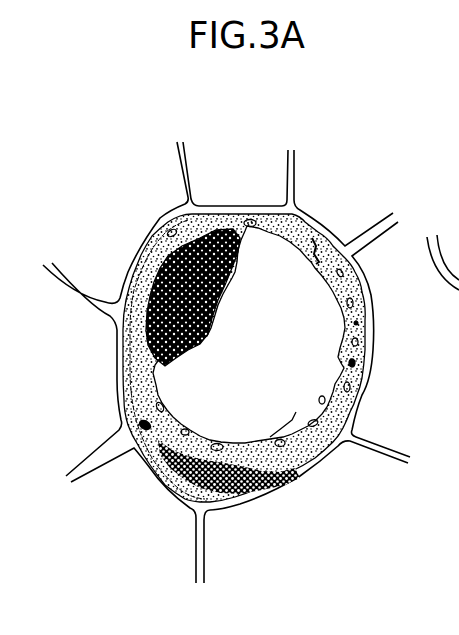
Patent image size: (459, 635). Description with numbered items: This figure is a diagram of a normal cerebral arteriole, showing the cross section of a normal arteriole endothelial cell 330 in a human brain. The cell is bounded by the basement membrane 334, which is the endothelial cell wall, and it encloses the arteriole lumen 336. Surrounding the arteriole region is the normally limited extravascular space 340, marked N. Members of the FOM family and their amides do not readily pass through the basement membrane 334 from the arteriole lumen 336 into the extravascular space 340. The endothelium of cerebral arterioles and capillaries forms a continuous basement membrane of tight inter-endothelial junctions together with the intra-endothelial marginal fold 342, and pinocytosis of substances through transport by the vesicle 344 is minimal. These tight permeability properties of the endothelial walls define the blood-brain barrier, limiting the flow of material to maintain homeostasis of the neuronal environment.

The arteriole endothelial cell 330 is at (318, 550).
The basement membrane 334 is at (345, 299).
The arteriole lumen 336 is at (292, 412).
The extravascular space 340 is at (363, 392).
The intra-endothelial marginal fold 342 is at (346, 361).
The vesicle 344 is at (342, 266).